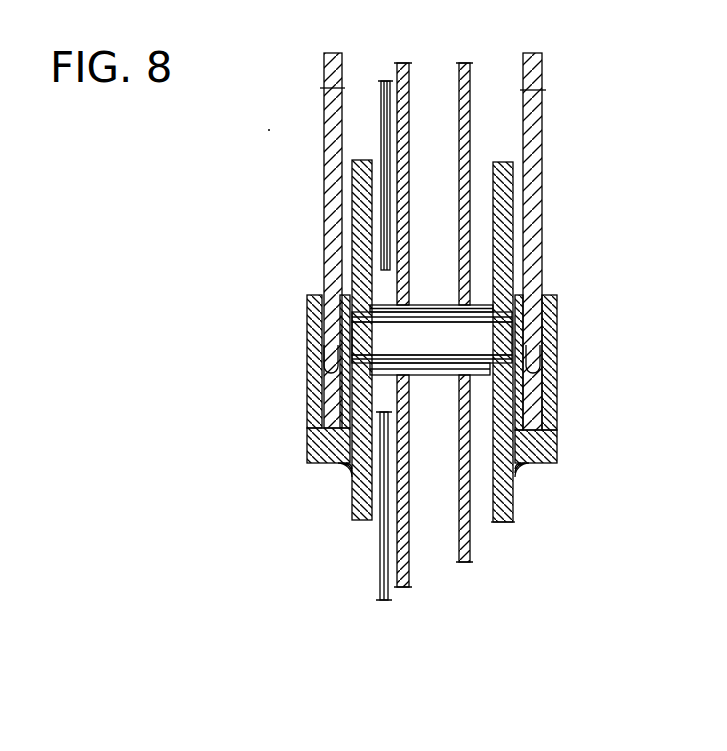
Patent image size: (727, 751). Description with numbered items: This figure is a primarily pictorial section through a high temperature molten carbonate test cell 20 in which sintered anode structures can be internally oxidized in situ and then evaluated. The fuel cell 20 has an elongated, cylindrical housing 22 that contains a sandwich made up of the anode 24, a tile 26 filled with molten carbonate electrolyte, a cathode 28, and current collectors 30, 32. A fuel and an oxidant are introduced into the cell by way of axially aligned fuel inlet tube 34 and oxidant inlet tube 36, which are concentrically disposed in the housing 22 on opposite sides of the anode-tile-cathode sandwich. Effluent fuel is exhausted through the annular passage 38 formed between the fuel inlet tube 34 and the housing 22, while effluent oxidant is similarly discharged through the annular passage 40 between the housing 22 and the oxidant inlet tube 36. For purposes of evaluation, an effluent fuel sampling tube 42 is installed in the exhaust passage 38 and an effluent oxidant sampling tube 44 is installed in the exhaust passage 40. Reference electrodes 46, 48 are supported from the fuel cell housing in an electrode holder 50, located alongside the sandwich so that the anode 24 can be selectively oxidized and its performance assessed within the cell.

The test cell 20 is at (268, 130).
The housing 22 is at (512, 510).
The anode 24 is at (358, 313).
The tile 26 is at (505, 337).
The cathode 28 is at (356, 360).
The current collector 30 is at (375, 303).
The current collector 32 is at (372, 378).
The fuel inlet tube 34 is at (473, 90).
The oxidant inlet tube 36 is at (352, 503).
The annular passage 38 is at (484, 203).
The annular passage 40 is at (482, 492).
The effluent fuel sampling tube 42 is at (382, 90).
The effluent oxidant sampling tube 44 is at (380, 558).
The reference electrode 46 is at (323, 174).
The reference electrode 48 is at (543, 247).
The electrode holder 50 is at (307, 443).